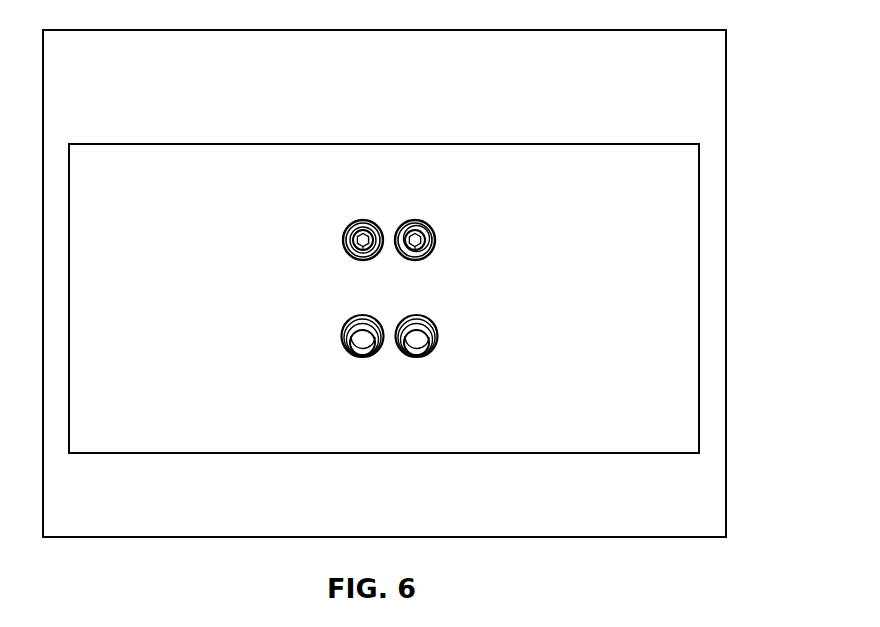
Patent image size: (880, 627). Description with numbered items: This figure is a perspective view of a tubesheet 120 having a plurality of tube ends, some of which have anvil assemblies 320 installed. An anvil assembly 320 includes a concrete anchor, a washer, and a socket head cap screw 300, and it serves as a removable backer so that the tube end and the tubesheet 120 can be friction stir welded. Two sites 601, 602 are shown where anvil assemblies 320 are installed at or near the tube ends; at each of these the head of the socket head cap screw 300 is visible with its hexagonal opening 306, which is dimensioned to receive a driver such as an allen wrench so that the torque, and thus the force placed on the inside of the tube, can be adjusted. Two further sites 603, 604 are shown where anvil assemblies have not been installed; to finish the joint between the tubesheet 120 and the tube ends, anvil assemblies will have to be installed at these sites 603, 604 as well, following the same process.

The tubesheet 120 is at (661, 183).
The socket head cap screw 300 is at (381, 221).
The anvil assembly 320 is at (348, 232).
The hexagonal opening 306 is at (354, 260).
The site 601 is at (319, 229).
The site 602 is at (437, 238).
The site 603 is at (416, 360).
The site 604 is at (362, 359).